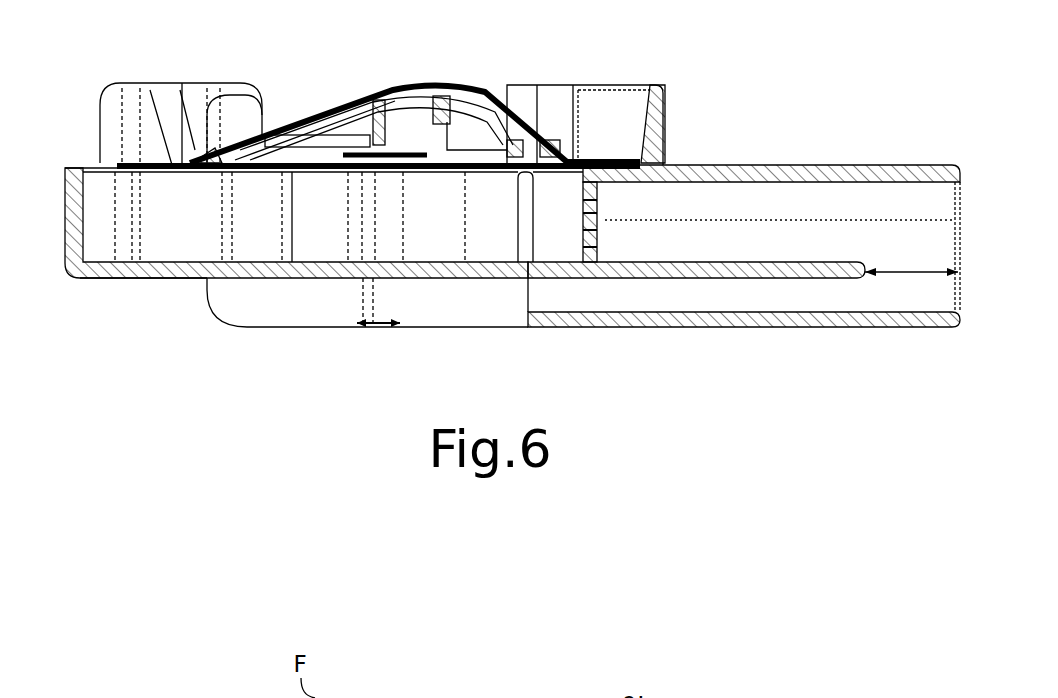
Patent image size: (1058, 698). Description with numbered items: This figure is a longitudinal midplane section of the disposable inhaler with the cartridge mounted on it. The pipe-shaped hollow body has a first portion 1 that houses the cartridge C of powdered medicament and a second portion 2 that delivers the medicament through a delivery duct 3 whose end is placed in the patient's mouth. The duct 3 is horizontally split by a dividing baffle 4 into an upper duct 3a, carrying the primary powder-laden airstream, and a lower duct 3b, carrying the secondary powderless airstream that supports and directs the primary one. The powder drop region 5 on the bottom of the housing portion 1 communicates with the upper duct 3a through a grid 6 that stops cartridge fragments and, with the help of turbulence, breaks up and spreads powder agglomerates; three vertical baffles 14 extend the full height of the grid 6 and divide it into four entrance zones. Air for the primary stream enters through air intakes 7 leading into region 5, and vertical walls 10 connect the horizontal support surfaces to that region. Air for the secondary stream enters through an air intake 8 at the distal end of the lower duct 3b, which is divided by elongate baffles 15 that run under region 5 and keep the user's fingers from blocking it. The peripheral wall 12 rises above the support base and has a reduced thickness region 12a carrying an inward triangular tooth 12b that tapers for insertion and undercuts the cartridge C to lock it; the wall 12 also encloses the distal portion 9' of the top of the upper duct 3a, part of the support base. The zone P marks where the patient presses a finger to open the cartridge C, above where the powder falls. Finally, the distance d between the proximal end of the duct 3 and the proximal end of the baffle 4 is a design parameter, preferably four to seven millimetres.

The first portion 1 is at (194, 348).
The second portion 2 is at (880, 100).
The delivery duct 3 is at (845, 168).
The upper duct 3a is at (718, 193).
The lower duct 3b is at (707, 300).
The dividing baffle 4 is at (818, 268).
The powder drop region 5 is at (396, 325).
The grid 6 is at (593, 240).
The air intakes 7 is at (92, 175).
The air intake 8 is at (528, 292).
The distal portion 9' is at (382, 84).
The vertical walls 10 is at (175, 225).
The peripheral wall 12 is at (655, 92).
The reduced thickness region 12a is at (205, 92).
The triangular tooth 12b is at (165, 95).
The vertical baffles 14 is at (563, 235).
The elongate baffles 15 is at (297, 302).
The cartridge C is at (340, 110).
The zone P is at (447, 85).
The distance d is at (911, 260).